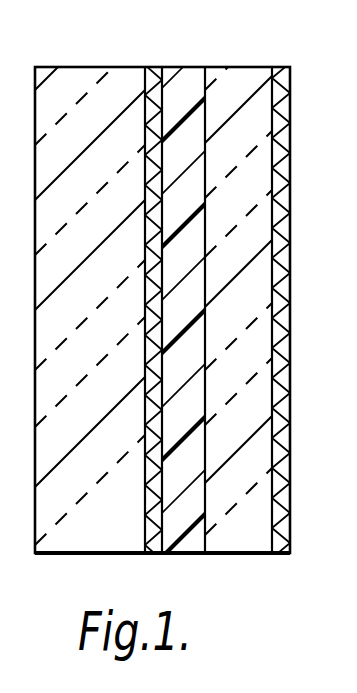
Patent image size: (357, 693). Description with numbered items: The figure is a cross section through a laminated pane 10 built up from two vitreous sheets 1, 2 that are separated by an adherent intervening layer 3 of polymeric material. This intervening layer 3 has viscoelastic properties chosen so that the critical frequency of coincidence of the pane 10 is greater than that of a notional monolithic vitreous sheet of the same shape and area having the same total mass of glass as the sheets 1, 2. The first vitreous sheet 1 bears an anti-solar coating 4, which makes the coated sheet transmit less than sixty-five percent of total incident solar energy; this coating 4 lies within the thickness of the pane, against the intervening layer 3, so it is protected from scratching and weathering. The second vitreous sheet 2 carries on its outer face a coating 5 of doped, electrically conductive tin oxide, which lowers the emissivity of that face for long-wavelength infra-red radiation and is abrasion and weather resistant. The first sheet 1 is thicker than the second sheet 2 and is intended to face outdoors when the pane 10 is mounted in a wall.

The laminated pane 10 is at (291, 63).
The first vitreous sheet 1 is at (73, 536).
The anti-solar coating 4 is at (151, 546).
The intervening layer 3 is at (193, 547).
The second vitreous sheet 2 is at (232, 542).
The tin oxide coating 5 is at (278, 540).